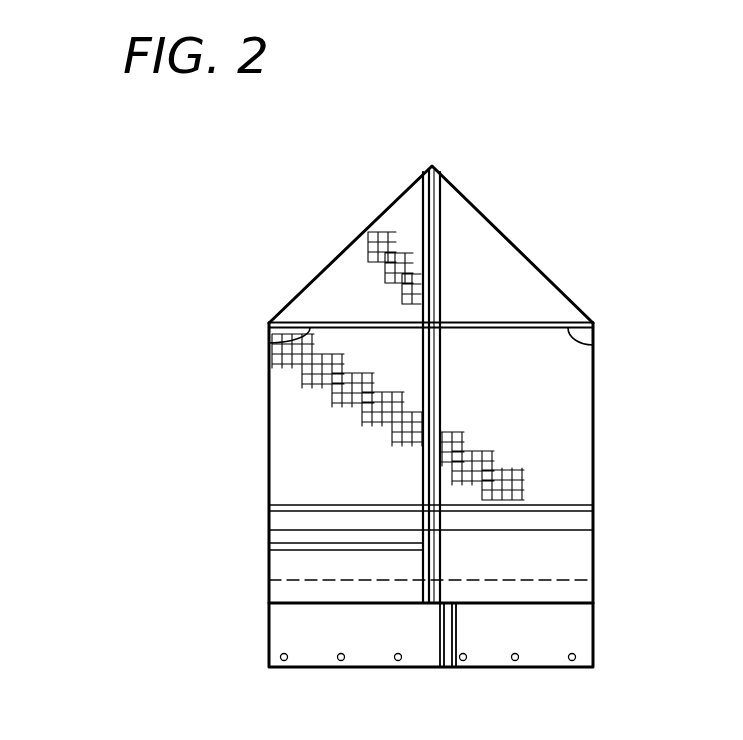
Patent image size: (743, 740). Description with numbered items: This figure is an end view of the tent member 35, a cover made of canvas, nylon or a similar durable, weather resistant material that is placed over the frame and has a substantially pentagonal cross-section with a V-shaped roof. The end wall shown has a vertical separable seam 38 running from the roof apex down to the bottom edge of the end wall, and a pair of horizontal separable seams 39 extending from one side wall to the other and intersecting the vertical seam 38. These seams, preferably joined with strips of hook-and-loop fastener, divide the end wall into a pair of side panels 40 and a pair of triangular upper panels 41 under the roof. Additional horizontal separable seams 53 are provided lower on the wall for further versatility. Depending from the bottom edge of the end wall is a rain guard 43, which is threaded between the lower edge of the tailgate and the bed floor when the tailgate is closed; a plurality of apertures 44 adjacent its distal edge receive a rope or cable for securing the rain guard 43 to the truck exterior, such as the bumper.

The tent member 35 is at (362, 247).
The vertical separable seam 38 is at (440, 222).
The horizontal separable seams 39 is at (282, 343).
The side panels 40 is at (295, 420).
The triangular upper panels 41 is at (507, 262).
The rain guard 43 is at (403, 634).
The apertures 44 is at (341, 661).
The additional horizontal separable seams 53 is at (303, 548).